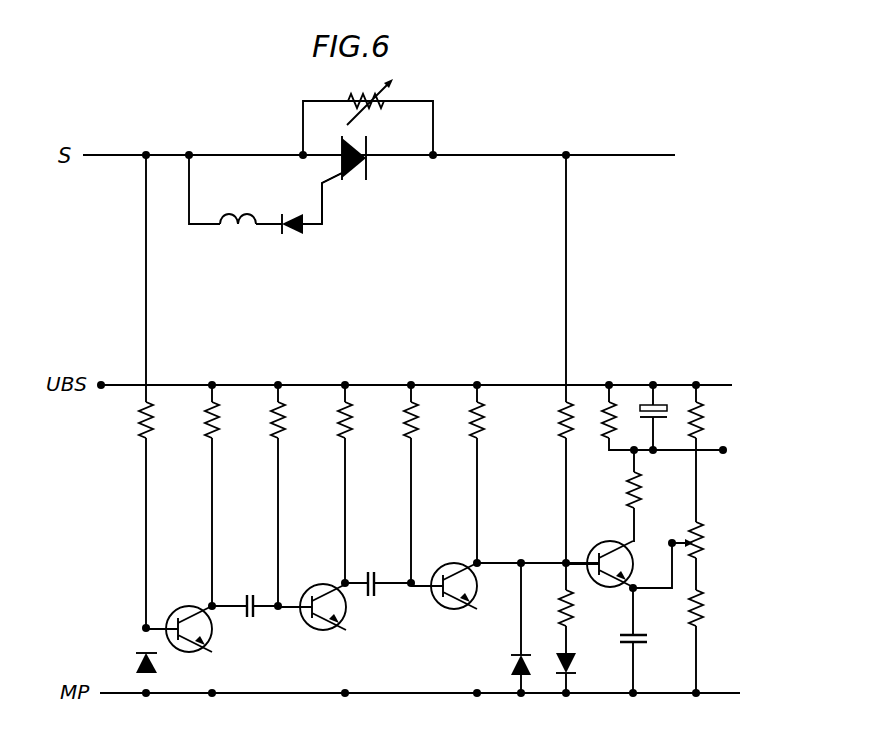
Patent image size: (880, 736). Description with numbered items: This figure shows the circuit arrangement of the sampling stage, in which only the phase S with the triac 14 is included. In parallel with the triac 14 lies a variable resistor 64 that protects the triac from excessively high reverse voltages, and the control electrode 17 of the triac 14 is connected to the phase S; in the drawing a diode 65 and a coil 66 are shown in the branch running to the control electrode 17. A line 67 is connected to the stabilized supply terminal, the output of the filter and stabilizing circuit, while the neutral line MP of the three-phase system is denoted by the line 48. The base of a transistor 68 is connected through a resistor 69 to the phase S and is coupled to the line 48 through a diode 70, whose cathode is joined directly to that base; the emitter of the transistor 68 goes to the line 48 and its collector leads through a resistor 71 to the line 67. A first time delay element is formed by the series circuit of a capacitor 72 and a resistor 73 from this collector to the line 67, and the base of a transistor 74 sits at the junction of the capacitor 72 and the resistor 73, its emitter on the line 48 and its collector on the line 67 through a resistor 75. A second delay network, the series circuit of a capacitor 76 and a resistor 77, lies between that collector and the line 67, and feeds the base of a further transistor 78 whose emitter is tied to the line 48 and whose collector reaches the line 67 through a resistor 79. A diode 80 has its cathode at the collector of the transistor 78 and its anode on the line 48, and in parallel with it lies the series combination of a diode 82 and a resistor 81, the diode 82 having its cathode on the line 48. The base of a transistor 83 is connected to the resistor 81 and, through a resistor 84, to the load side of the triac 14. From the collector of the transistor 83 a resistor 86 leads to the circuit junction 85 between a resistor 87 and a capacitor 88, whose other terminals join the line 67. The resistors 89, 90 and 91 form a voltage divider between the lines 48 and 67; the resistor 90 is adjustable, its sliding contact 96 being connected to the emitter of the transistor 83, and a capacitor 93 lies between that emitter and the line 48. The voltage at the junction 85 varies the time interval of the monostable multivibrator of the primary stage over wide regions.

The triac 14 is at (368, 163).
The control electrode 17 is at (324, 180).
The neutral line MP 48 is at (432, 693).
The variable resistor 64 is at (380, 109).
The diode 65 is at (300, 232).
The secondary winding 66 is at (236, 213).
The line 67 is at (241, 384).
The transistor 68 is at (214, 636).
The resistor 69 is at (139, 426).
The diode 70 is at (135, 660).
The resistor 71 is at (205, 426).
The capacitor 72 is at (250, 595).
The resistor 73 is at (271, 426).
The transistor 74 is at (348, 613).
The resistor 75 is at (338, 426).
The capacitor 76 is at (372, 570).
The resistor 77 is at (404, 426).
The transistor 78 is at (478, 593).
The resistor 79 is at (470, 426).
The diode 80 is at (515, 661).
The resistor 81 is at (558, 603).
The diode 82 is at (577, 664).
The transistor 83 is at (627, 569).
The resistor 84 is at (559, 426).
The circuit junction 85 is at (723, 454).
The resistor 86 is at (626, 489).
The resistor 87 is at (605, 428).
The capacitor 88 is at (658, 405).
The resistor 89 is at (705, 607).
The adjustable resistor 90 is at (705, 544).
The resistor 91 is at (704, 428).
The capacitor 93 is at (645, 641).
The sliding contact 96 is at (678, 541).